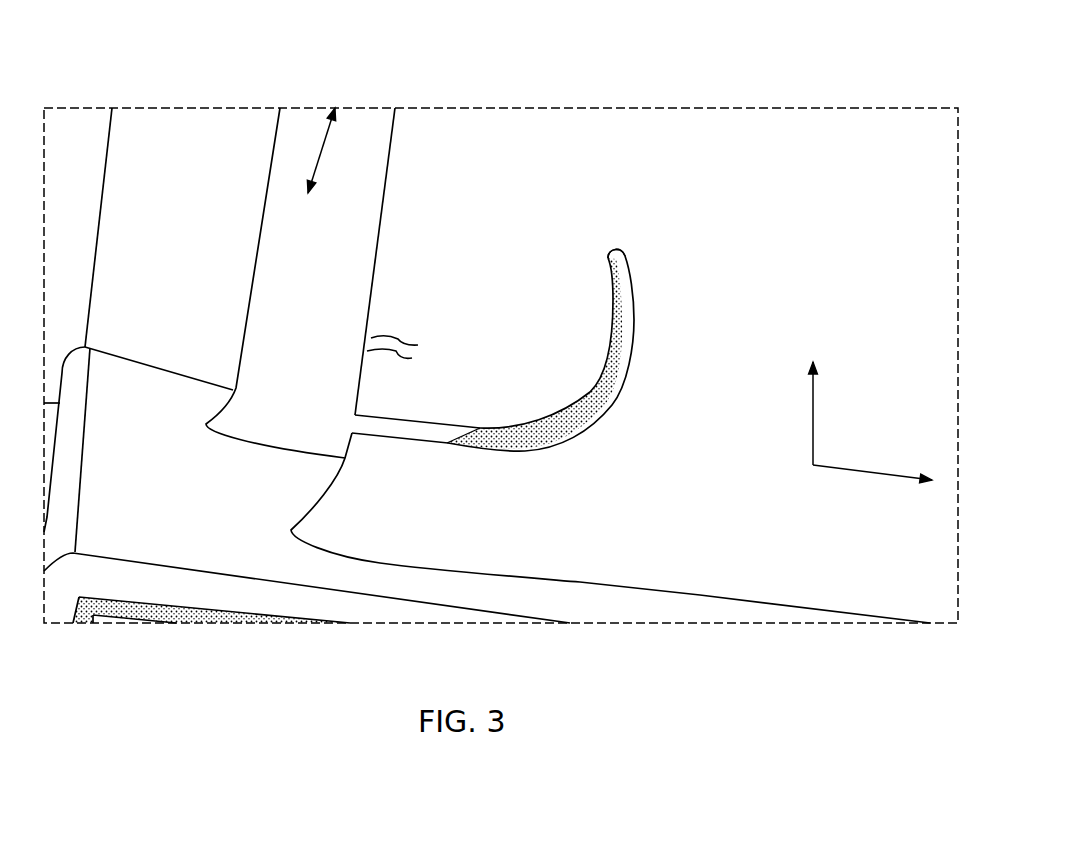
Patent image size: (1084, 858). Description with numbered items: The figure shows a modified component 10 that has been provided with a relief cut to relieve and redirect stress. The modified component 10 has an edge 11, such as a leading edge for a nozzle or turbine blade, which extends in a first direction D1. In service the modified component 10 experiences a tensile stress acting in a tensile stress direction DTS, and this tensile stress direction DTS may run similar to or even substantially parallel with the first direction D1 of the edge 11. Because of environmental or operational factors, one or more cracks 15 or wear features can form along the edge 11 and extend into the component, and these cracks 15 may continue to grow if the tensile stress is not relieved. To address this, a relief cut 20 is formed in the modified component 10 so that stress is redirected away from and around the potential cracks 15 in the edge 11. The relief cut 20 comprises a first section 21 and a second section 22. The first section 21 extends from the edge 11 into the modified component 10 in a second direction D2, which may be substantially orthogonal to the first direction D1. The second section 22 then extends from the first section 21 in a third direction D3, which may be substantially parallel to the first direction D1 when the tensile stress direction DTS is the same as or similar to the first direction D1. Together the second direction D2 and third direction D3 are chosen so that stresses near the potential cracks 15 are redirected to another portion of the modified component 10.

The modified component 10 is at (623, 135).
The edge 11 is at (357, 300).
The cracks 15 is at (402, 315).
The relief cut 20 is at (531, 370).
The first section 21 is at (462, 455).
The second section 22 is at (635, 278).
The first direction D1 is at (325, 152).
The tensile stress direction DTS is at (355, 100).
The second direction D2 is at (872, 470).
The third direction D3 is at (813, 415).